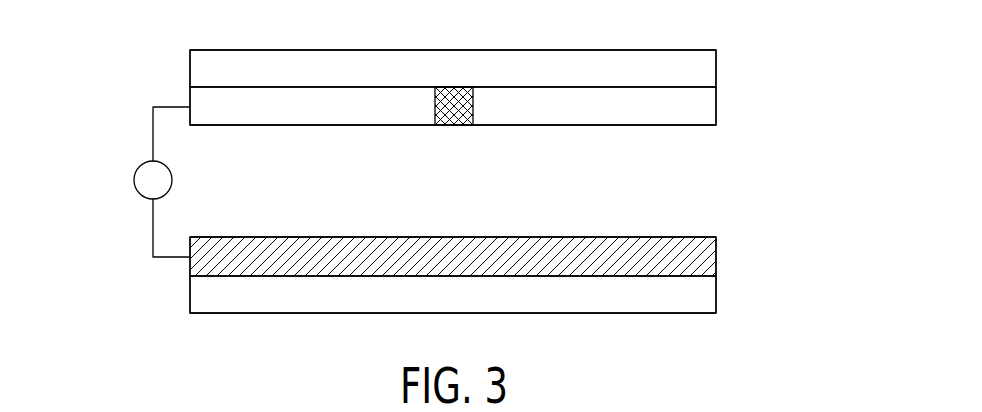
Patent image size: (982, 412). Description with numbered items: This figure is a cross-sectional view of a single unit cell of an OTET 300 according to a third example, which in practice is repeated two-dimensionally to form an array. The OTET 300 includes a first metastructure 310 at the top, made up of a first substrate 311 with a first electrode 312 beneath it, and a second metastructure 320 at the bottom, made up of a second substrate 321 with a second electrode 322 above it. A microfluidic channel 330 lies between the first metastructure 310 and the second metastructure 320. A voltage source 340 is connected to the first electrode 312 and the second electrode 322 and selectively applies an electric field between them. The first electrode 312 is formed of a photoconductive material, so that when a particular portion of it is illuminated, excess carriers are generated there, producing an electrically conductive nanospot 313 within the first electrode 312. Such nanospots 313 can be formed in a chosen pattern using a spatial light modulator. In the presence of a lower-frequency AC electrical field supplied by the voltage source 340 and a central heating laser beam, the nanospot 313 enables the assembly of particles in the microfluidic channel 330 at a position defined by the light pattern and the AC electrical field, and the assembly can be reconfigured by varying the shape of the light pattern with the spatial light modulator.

The OTET 300 is at (82, 78).
The first metastructure 310 is at (828, 50).
The first substrate 311 is at (717, 65).
The first electrode 312 is at (717, 103).
The electrically conductive nanospot 313 is at (453, 126).
The second metastructure 320 is at (830, 238).
The second substrate 321 is at (717, 287).
The second electrode 322 is at (717, 253).
The microfluidic channel 330 is at (660, 202).
The voltage source 340 is at (134, 180).